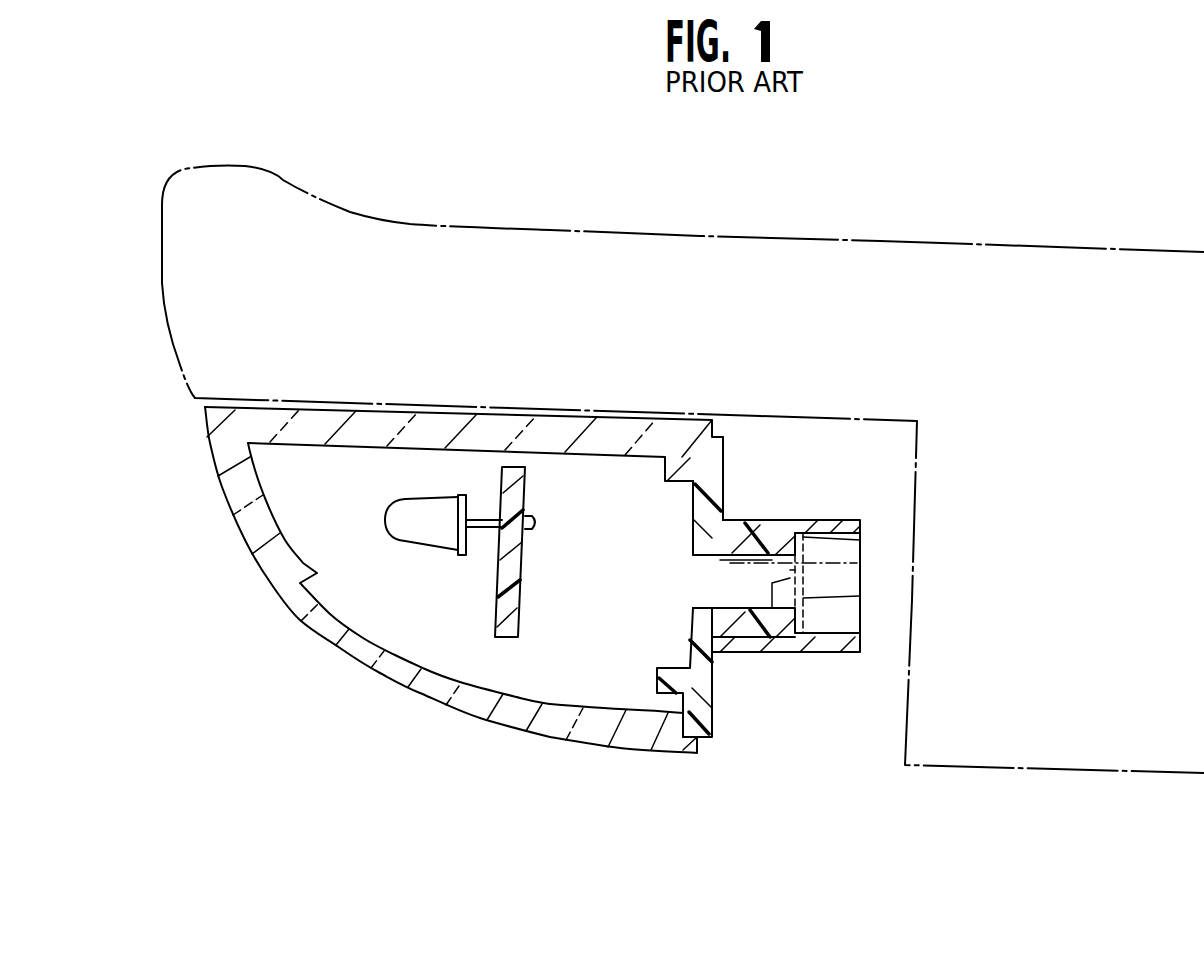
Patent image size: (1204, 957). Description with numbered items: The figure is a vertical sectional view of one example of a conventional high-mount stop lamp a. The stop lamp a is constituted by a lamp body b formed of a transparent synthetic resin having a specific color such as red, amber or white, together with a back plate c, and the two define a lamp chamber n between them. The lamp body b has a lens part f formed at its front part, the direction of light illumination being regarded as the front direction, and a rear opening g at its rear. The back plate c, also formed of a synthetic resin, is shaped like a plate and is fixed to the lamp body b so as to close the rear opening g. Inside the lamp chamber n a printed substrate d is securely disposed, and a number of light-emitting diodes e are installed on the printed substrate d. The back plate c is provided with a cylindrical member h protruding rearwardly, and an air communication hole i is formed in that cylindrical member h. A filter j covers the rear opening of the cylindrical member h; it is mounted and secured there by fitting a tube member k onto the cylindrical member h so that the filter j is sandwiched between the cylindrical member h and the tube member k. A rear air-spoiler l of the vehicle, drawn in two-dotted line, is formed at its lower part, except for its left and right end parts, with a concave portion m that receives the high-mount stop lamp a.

The high-mount stop lamp a is at (559, 770).
The lamp body b is at (500, 416).
The back plate c is at (720, 465).
The printed substrate d is at (493, 630).
The light-emitting diodes e is at (420, 538).
The lens part f is at (250, 535).
The rear opening g is at (667, 716).
The cylindrical member h is at (740, 541).
The air communication hole i is at (857, 563).
The filter j is at (803, 597).
The tube member k is at (823, 657).
The rear air-spoiler l is at (912, 240).
The concave portion m is at (863, 420).
The lamp chamber n is at (607, 628).